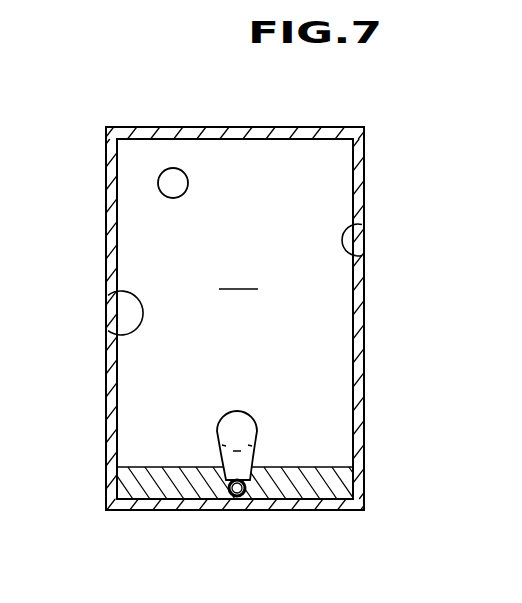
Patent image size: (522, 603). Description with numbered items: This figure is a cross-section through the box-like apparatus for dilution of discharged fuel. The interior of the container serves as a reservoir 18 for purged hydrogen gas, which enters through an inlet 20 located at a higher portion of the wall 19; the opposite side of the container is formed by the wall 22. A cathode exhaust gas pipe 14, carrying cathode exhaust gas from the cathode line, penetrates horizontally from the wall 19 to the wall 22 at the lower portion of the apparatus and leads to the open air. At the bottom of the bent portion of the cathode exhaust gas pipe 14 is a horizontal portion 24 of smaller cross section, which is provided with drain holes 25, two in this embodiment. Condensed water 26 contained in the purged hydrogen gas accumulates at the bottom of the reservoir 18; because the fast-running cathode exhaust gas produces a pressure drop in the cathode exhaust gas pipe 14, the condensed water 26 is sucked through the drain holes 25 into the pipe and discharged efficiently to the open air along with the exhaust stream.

The cathode exhaust gas pipe 14 is at (252, 414).
The reservoir 18 is at (238, 273).
The wall 19 is at (362, 262).
The inlet 20 is at (160, 184).
The wall 22 is at (106, 331).
The horizontal portion 24 is at (232, 493).
The drain holes 25 is at (248, 492).
The condensed water 26 is at (145, 483).